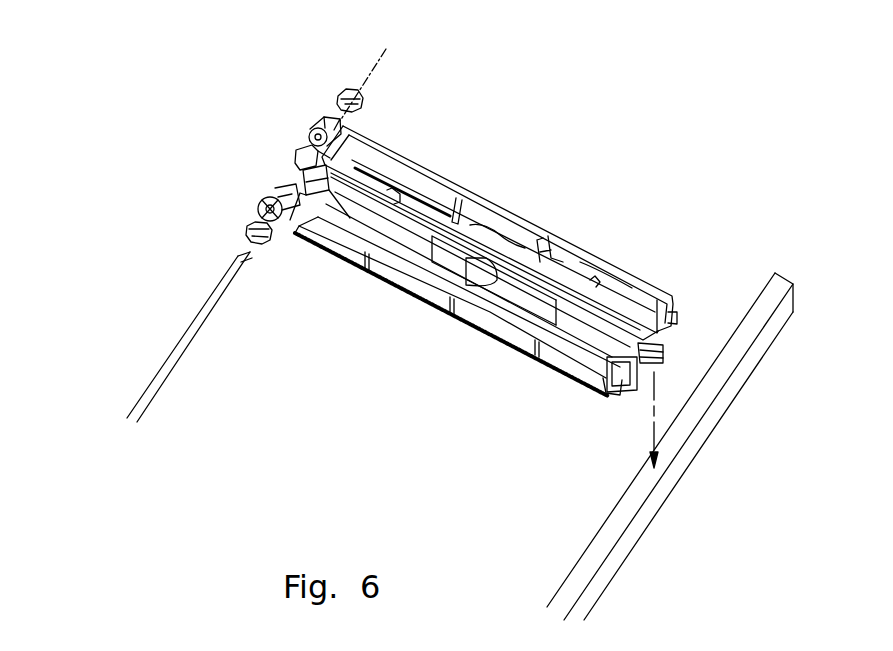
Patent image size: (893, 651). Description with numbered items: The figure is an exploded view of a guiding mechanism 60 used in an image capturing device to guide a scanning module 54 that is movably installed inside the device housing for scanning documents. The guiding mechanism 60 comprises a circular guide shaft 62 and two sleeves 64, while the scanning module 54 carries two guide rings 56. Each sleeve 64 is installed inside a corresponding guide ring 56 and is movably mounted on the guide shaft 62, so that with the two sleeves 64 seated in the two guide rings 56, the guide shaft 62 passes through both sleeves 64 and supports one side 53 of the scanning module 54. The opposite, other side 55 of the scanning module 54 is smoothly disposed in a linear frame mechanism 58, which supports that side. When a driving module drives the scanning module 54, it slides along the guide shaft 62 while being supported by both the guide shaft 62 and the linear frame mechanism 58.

The one side of the scanning module 53 is at (291, 262).
The scanning module 54 is at (419, 175).
The other side of the scanning module 55 is at (606, 416).
The guide ring 56 is at (309, 135).
The linear frame mechanism 58 is at (703, 397).
The guiding mechanism 60 is at (152, 174).
The guide shaft 62 is at (233, 266).
The sleeve 64 is at (338, 93).